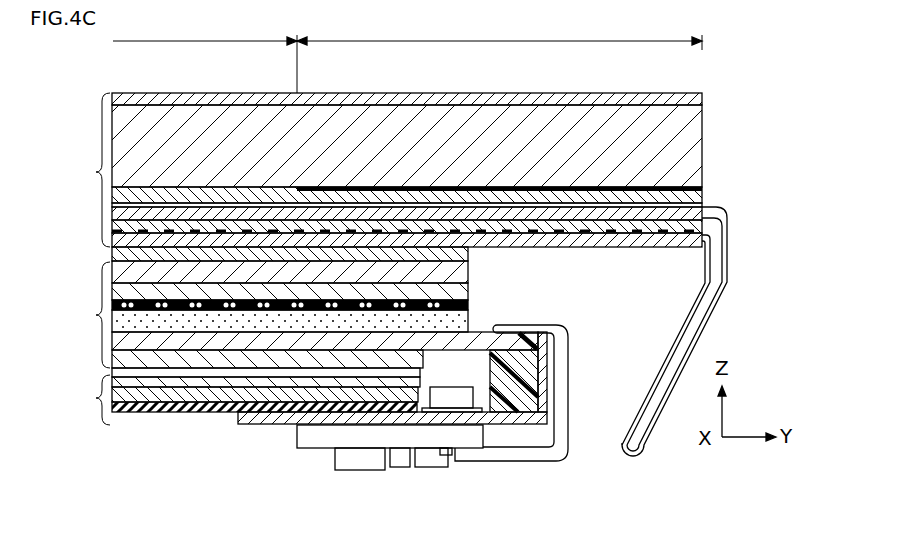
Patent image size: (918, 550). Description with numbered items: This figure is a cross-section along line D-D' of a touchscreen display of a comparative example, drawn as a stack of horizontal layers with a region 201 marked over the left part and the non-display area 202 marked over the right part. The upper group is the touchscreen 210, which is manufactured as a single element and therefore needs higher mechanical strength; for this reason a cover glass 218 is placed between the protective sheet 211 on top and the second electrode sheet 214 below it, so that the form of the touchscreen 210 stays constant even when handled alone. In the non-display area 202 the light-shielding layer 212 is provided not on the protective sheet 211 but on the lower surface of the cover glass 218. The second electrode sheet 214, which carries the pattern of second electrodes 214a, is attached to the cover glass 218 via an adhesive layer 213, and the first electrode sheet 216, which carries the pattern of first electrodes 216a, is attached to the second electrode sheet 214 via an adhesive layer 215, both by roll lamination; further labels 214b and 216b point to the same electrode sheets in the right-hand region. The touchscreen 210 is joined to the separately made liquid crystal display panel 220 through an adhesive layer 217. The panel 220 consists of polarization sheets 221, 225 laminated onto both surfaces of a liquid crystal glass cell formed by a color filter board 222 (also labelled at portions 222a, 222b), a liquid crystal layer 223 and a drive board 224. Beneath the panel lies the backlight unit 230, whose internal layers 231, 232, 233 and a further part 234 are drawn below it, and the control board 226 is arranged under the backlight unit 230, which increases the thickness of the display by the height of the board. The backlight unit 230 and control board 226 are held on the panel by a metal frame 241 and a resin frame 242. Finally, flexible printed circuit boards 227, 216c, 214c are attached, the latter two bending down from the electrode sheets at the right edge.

The first region 201 is at (205, 53).
The non-display area 202 is at (499, 32).
The touchscreen 210 is at (77, 170).
The protective sheet 211 is at (702, 97).
The cover glass 218 is at (702, 140).
The light-shielding layer 212 is at (702, 194).
The adhesive layer 213 is at (702, 200).
The second electrode sheet 214 is at (724, 211).
The second electrodes 214a is at (195, 214).
The second portion of touch sensor substrate 214b is at (362, 214).
The flexible printed circuit board 214c is at (723, 296).
The adhesive layer 215 is at (723, 225).
The first electrode sheet 216 is at (723, 247).
The first electrodes 216a is at (260, 240).
The second portion of display substrate 216b is at (447, 240).
The flexible printed circuit board 216c is at (704, 317).
The adhesive layer 217 is at (470, 255).
The liquid crystal display panel 220 is at (77, 315).
The polarization sheet 221 is at (430, 275).
The color filter board 222 is at (430, 302).
The first portion of light guide plate 222a is at (186, 306).
The second portion of light guide plate 222b is at (375, 306).
The liquid crystal layer 223 is at (520, 340).
The drive board 224 is at (420, 358).
The polarization sheet 225 is at (420, 394).
The control board 226 is at (313, 437).
The flexible printed circuit board 227 is at (568, 432).
The backlight unit 230 is at (76, 400).
The sensor layer 231 is at (212, 410).
The sensor substrate 232 is at (173, 402).
The shield layer 233 is at (130, 414).
The connector 234 is at (460, 400).
The metal frame 241 is at (243, 424).
The resin frame 242 is at (542, 412).